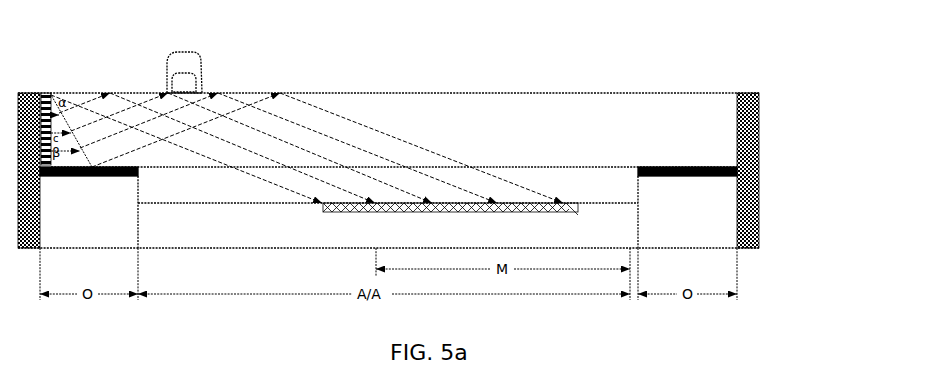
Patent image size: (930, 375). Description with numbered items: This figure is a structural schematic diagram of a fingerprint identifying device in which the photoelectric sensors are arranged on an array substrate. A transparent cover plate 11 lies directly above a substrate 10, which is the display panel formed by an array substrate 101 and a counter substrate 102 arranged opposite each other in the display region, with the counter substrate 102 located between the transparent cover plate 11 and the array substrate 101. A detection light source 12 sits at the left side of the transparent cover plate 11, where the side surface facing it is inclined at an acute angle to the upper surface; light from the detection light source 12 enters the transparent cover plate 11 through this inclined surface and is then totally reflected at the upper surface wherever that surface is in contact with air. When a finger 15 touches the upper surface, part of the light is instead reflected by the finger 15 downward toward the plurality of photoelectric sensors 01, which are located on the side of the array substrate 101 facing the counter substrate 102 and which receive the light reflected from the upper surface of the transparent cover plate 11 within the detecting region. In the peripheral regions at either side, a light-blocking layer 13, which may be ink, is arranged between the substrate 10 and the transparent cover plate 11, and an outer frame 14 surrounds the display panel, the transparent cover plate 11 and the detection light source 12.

The photoelectric sensor 01 is at (493, 120).
The substrate 10 is at (816, 181).
The array substrate 101 is at (615, 231).
The counter substrate 102 is at (615, 189).
The transparent cover plate 11 is at (388, 108).
The detection light source 12 is at (43, 93).
The light-blocking layer 13 is at (702, 96).
The outer frame 14 is at (776, 149).
The finger 15 is at (182, 66).